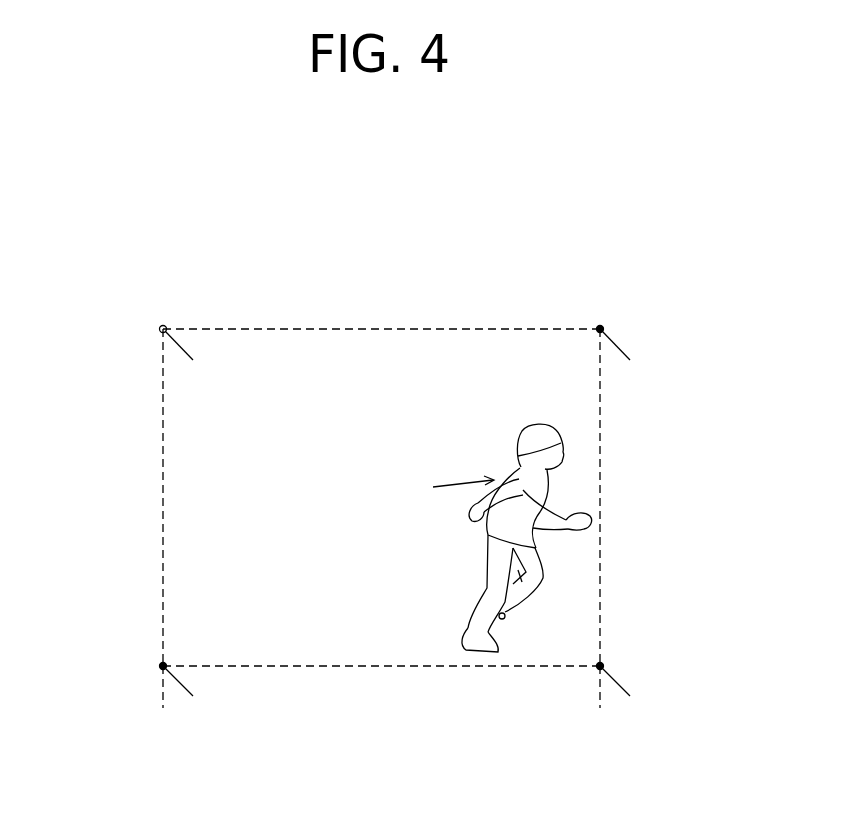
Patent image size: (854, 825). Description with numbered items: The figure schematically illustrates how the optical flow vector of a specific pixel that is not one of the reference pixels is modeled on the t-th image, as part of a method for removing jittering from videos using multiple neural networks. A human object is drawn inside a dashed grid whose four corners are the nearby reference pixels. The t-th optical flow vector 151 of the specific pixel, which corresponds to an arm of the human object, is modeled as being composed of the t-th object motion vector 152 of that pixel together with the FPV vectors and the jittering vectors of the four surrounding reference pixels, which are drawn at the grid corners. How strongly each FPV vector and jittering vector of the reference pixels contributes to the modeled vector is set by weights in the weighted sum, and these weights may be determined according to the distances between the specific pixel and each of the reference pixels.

The t-th optical flow vector 151 is at (527, 465).
The t-th object motion vector 152 is at (458, 483).